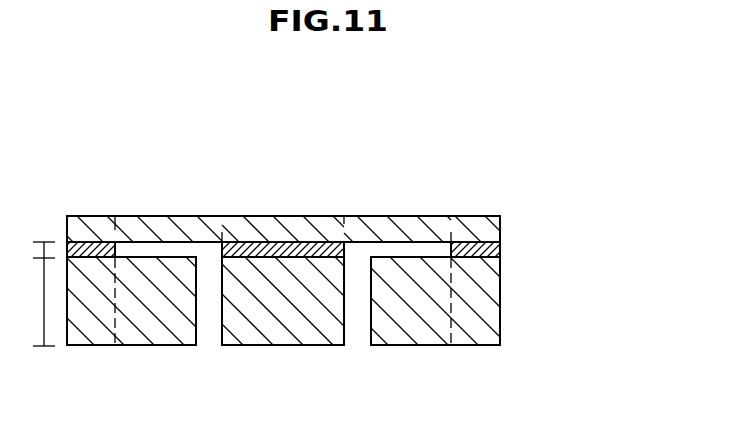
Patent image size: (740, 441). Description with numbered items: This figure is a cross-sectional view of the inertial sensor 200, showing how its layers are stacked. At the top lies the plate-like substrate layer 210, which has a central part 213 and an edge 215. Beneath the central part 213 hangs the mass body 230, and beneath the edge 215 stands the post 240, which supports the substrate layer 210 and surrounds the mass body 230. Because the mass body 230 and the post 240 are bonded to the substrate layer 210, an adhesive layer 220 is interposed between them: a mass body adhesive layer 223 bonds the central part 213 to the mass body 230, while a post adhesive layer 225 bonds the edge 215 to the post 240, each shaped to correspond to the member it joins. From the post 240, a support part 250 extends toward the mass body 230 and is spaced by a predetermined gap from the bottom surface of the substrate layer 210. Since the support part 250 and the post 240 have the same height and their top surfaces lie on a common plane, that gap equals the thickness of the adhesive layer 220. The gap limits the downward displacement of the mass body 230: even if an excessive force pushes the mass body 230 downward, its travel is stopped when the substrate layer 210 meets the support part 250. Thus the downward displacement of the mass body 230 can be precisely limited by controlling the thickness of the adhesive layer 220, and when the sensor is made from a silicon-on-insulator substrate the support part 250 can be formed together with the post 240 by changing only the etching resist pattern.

The inertial sensor 200 is at (164, 100).
The substrate layer 210 is at (508, 229).
The central part of the substrate layer 213 is at (303, 229).
The edge of the substrate layer 215 is at (470, 226).
The adhesive layer 220 is at (508, 250).
The mass body adhesive layer 223 is at (262, 252).
The post adhesive layer 225 is at (92, 243).
The mass body 230 is at (293, 313).
The post 240 is at (483, 312).
The support part 250 is at (407, 313).